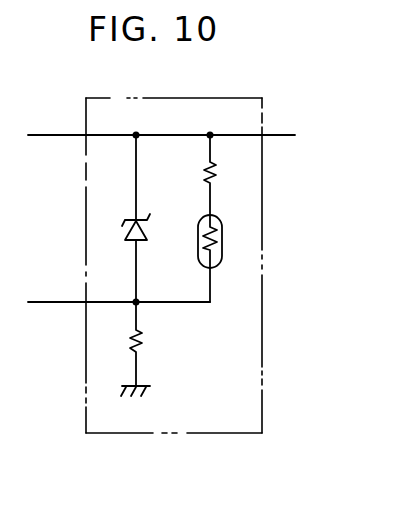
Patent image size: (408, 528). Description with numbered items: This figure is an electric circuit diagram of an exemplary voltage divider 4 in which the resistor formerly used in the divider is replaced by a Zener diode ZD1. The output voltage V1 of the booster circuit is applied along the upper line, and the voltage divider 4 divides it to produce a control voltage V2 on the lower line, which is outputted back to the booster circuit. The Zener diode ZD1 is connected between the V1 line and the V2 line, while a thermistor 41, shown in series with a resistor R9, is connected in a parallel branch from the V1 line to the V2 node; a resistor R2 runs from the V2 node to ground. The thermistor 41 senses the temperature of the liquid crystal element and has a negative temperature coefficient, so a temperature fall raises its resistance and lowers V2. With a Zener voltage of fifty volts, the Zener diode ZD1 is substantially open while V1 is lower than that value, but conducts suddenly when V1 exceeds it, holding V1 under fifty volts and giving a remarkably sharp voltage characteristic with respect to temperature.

The voltage divider 4 is at (225, 98).
The output voltage V1 is at (53, 135).
The control voltage V2 is at (53, 303).
The Zener diode ZD1 is at (147, 241).
The resistor R9 is at (220, 173).
The thermistor 41 is at (222, 262).
The resistor R2 is at (143, 340).